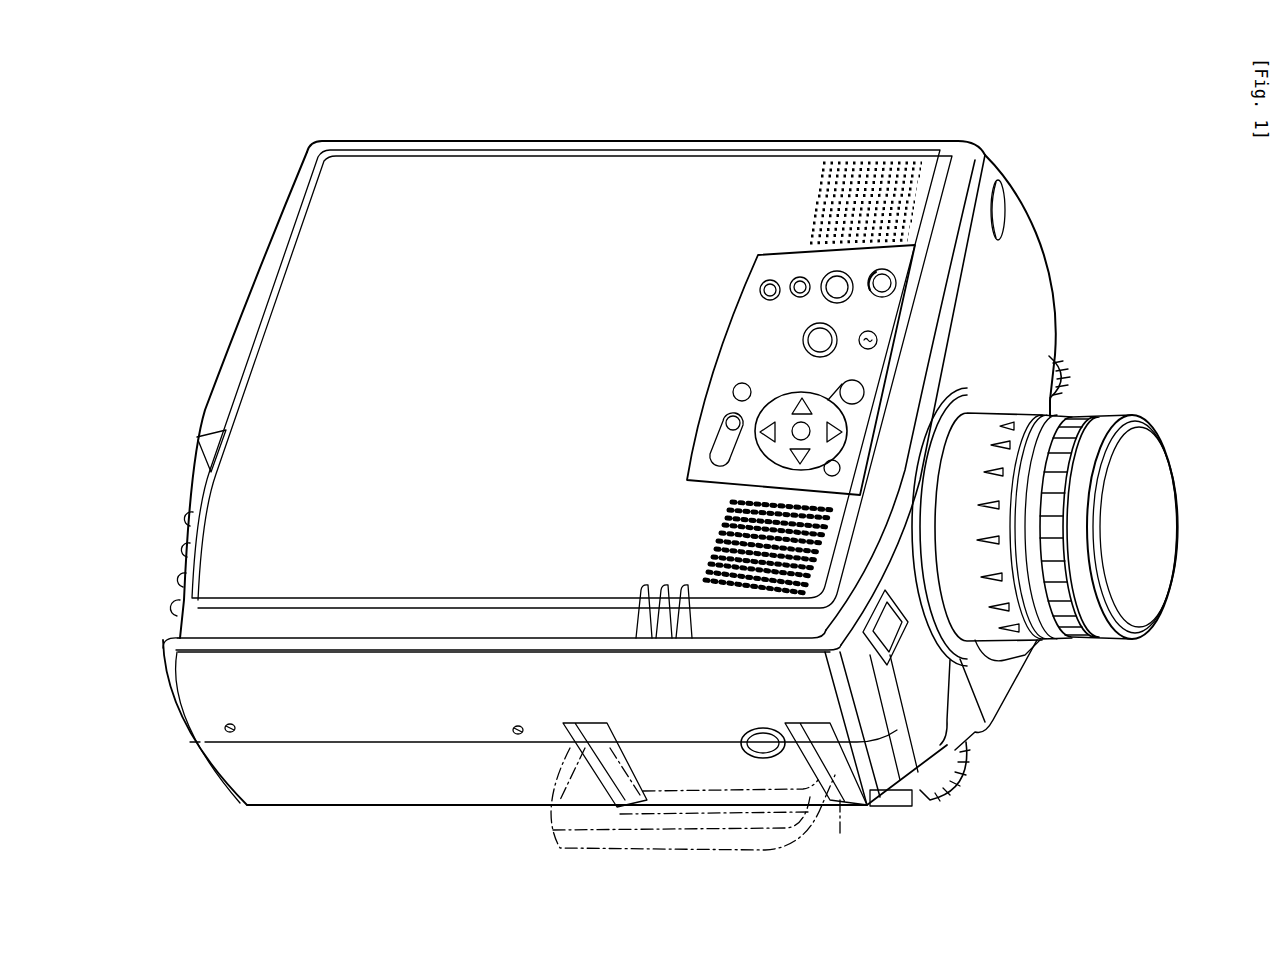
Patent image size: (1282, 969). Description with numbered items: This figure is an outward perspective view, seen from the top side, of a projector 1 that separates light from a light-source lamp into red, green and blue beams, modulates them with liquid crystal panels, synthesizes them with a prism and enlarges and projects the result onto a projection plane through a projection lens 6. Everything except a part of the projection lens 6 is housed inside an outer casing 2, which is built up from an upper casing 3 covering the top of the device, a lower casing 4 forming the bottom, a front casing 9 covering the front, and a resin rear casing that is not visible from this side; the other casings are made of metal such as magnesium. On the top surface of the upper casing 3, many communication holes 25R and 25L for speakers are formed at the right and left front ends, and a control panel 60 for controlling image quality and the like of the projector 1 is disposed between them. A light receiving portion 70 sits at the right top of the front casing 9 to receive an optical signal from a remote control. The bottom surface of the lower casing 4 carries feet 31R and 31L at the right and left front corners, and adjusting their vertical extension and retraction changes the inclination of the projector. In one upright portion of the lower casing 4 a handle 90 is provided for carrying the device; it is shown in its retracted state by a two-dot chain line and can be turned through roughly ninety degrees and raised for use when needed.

The projector 1 is at (283, 138).
The outer casing 2 is at (193, 764).
The upper casing 3 is at (198, 698).
The lower casing 4 is at (232, 767).
The projection lens 6 is at (1068, 418).
The front casing 9 is at (1028, 262).
The communication hole 25L is at (820, 194).
The communication hole 25R is at (724, 523).
The foot 31L is at (1066, 362).
The foot 31R is at (948, 786).
The control panel 60 is at (763, 327).
The light receiving portion 70 is at (1006, 211).
The handle 90 is at (808, 847).